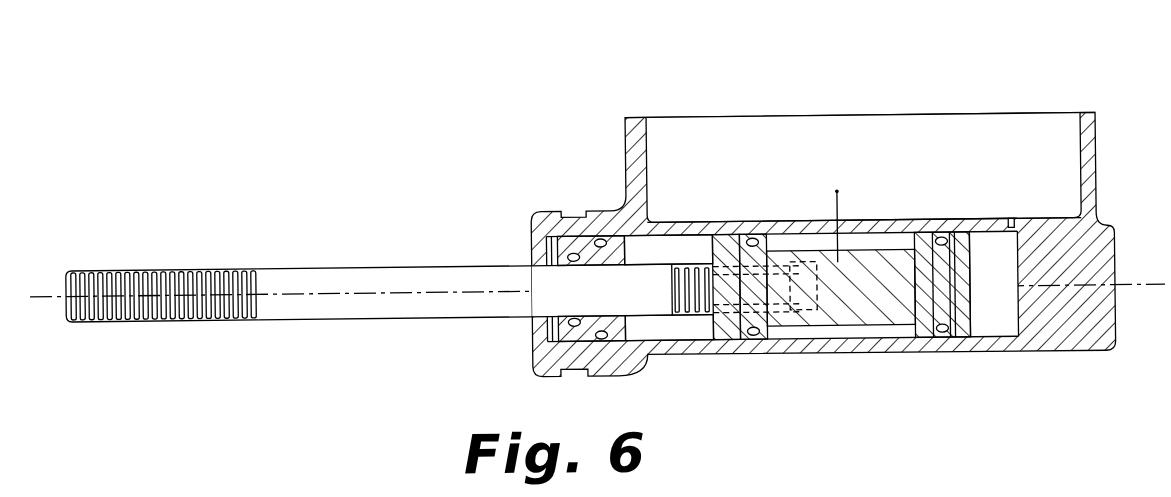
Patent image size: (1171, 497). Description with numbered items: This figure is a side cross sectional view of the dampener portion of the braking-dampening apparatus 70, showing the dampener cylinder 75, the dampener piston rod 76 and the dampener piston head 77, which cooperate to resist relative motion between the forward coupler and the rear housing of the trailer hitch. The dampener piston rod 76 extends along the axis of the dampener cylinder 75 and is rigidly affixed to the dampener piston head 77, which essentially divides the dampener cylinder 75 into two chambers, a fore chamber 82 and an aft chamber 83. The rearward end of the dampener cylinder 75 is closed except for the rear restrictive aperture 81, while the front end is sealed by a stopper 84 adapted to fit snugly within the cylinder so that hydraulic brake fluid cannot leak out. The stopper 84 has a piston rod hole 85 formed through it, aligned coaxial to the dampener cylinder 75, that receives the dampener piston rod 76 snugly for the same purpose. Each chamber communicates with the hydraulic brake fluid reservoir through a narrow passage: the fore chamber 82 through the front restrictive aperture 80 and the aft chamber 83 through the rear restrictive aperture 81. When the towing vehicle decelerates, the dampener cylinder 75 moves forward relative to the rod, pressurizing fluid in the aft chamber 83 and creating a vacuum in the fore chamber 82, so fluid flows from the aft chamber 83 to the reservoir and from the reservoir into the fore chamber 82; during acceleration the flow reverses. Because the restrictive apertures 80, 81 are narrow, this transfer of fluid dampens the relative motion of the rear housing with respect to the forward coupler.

The braking-dampening apparatus 70 is at (889, 114).
The dampener cylinder 75 is at (720, 358).
The dampener piston rod 76 is at (278, 262).
The dampener piston head 77 is at (848, 331).
The front restrictive aperture 80 is at (675, 229).
The rear restrictive aperture 81 is at (1012, 225).
The fore chamber 82 is at (680, 344).
The aft chamber 83 is at (1000, 355).
The stopper 84 is at (647, 346).
The piston rod hole 85 is at (620, 348).